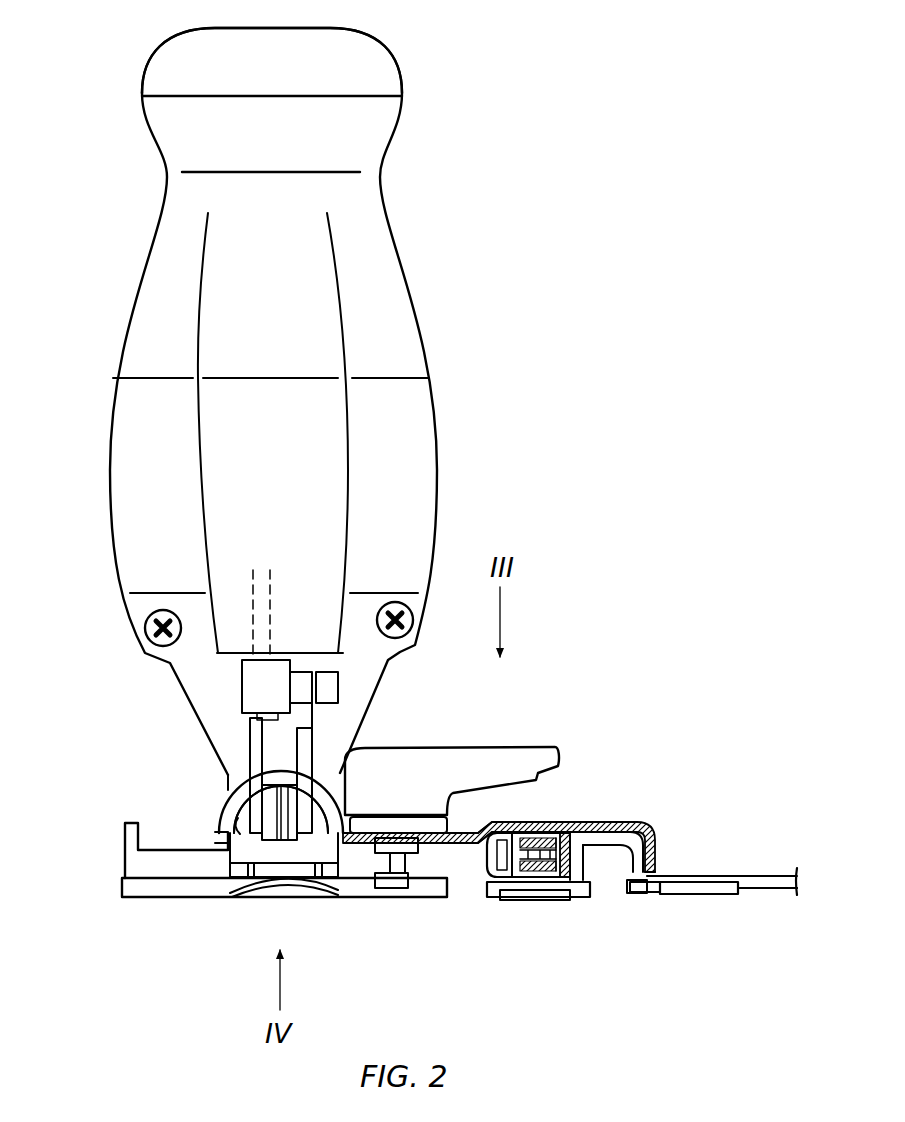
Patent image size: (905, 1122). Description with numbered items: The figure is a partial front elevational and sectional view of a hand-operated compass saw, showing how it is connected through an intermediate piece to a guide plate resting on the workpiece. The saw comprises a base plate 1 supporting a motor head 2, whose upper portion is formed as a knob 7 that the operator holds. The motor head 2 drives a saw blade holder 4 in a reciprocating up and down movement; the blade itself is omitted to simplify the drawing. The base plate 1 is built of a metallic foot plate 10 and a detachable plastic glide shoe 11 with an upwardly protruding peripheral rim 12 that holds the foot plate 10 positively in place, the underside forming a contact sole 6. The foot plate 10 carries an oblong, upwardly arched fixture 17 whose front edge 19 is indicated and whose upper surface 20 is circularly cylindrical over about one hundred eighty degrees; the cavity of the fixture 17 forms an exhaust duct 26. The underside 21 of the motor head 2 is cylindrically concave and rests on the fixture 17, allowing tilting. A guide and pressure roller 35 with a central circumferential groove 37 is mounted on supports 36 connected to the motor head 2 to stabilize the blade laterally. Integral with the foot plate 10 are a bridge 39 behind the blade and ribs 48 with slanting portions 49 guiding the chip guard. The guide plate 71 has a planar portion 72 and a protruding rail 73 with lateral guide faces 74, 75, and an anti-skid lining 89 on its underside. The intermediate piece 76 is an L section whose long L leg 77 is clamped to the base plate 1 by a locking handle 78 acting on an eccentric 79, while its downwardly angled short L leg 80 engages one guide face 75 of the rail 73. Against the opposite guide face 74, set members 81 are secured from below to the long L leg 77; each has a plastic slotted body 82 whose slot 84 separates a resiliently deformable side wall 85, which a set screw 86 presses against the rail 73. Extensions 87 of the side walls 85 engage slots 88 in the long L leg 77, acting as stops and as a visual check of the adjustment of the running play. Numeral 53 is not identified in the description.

The base plate 1 is at (117, 828).
The motor head 2 is at (372, 270).
The saw blade holder 4 is at (263, 675).
The contact sole 6 is at (148, 900).
The knob 7 is at (360, 68).
The foot plate 10 is at (140, 867).
The glide shoe 11 is at (167, 890).
The peripheral rim 12 is at (118, 888).
The fixture 17 is at (233, 793).
The front edge of the fixture 19 is at (233, 793).
The upper surface of the fixture 20 is at (223, 777).
The underside of motor head 21 is at (223, 830).
The exhaust duct 26 is at (343, 793).
The guide and pressure roller 35 is at (275, 840).
The supports 36 is at (255, 840).
The central circumferential groove 37 is at (282, 883).
The bridge 39 is at (300, 870).
The ribs 48 is at (325, 870).
The slanting portions 49 is at (325, 870).
The base plate top surface 53 is at (185, 882).
The guide plate 71 is at (728, 873).
The planar portion 72 is at (757, 895).
The rail 73 is at (655, 820).
The guide face 74 is at (595, 830).
The guide face 75 is at (637, 865).
The intermediate piece 76 is at (455, 848).
The long L leg 77 is at (575, 828).
The locking handle 78 is at (438, 787).
The eccentric 79 is at (390, 887).
The short L leg 80 is at (657, 847).
The set members 81 is at (485, 867).
The slotted body 82 is at (525, 890).
The slot 84 is at (557, 823).
The side wall 85 is at (563, 893).
The set screw 86 is at (520, 823).
The extensions 87 is at (570, 827).
The slots 88 is at (563, 823).
The anti-skid lining 89 is at (673, 895).